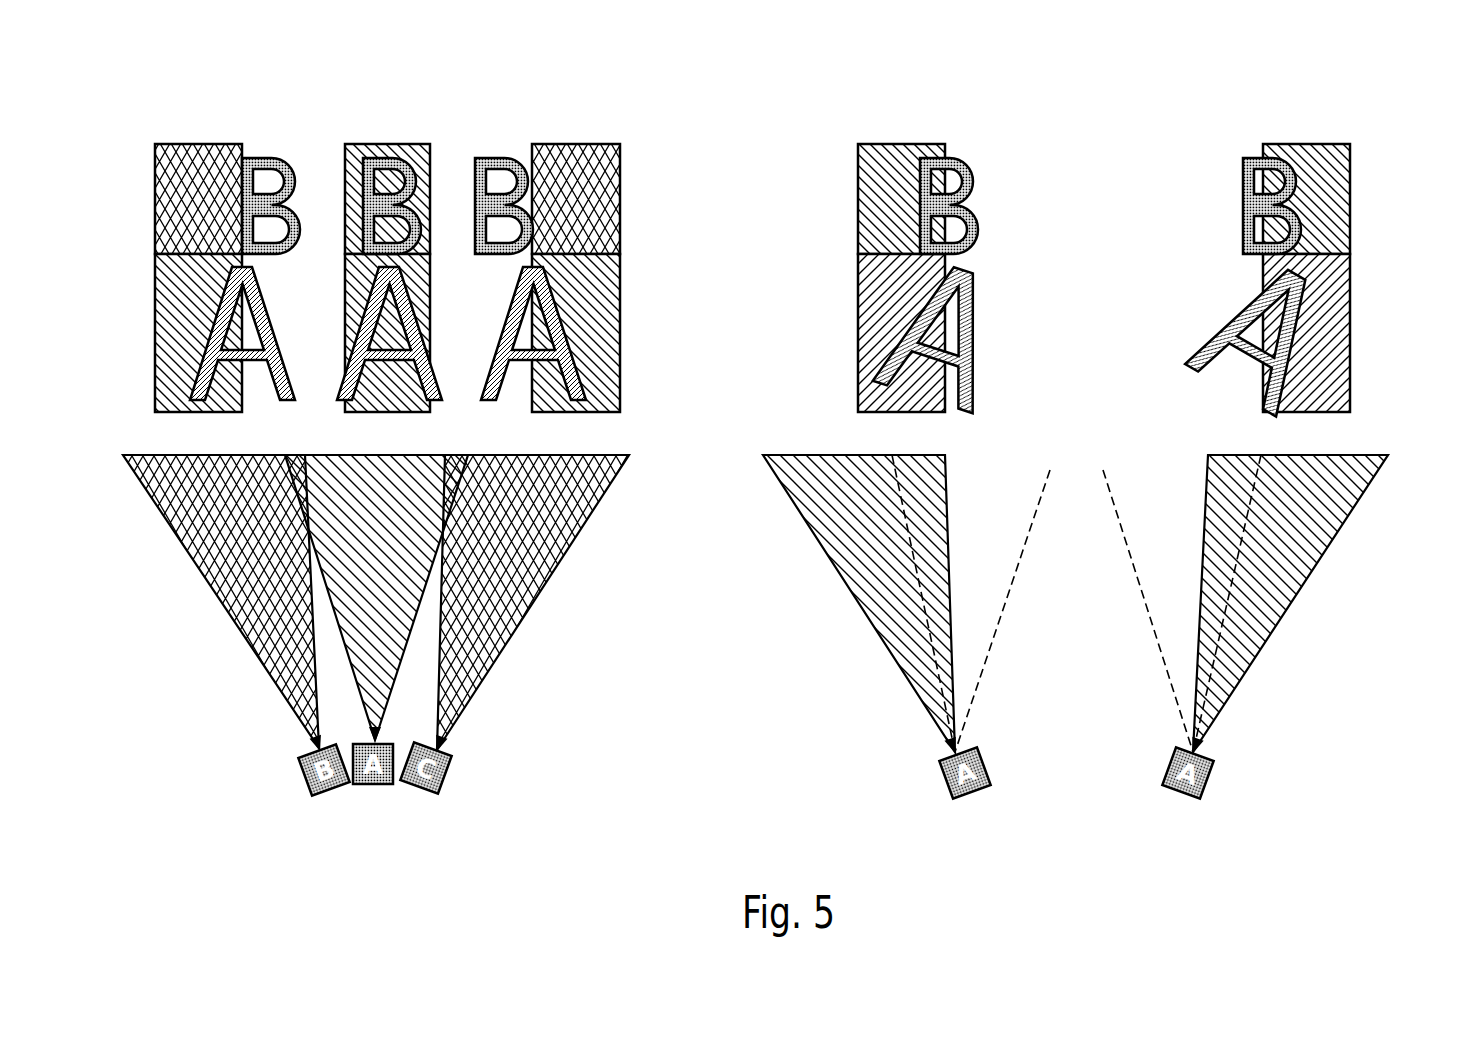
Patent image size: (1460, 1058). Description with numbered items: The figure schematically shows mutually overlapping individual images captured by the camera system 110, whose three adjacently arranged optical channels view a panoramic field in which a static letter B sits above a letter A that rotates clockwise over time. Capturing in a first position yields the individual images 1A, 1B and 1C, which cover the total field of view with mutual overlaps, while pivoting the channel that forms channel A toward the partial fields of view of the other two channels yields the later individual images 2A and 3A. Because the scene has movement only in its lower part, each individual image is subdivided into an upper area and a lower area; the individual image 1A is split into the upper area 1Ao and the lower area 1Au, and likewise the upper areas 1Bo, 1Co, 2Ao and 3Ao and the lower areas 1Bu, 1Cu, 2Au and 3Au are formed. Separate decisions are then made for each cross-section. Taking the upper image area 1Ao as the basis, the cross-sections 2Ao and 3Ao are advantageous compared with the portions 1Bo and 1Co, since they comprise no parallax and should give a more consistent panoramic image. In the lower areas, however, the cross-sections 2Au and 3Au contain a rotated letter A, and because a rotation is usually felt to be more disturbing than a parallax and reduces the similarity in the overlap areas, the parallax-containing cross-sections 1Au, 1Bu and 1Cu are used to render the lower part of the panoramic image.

The individual image 1B is at (186, 237).
The upper area of individual image 1B 1Bo is at (155, 150).
The lower area of individual image 1B 1Bu is at (155, 305).
The individual image 1A is at (366, 236).
The upper area of individual image 1A 1Ao is at (345, 150).
The lower area of individual image 1A 1Au is at (431, 265).
The individual image 1C is at (595, 236).
The upper area of individual image 1C 1Co is at (620, 197).
The lower area of individual image 1C 1Cu is at (620, 332).
The individual image 2A is at (887, 237).
The upper area of individual image 2A 2Ao is at (858, 197).
The lower area of individual image 2A 2Au is at (858, 334).
The individual image 3A is at (1316, 239).
The upper area of individual image 3A 3Ao is at (1350, 197).
The lower area of individual image 3A 3Au is at (1350, 333).
The camera system 110 is at (496, 784).